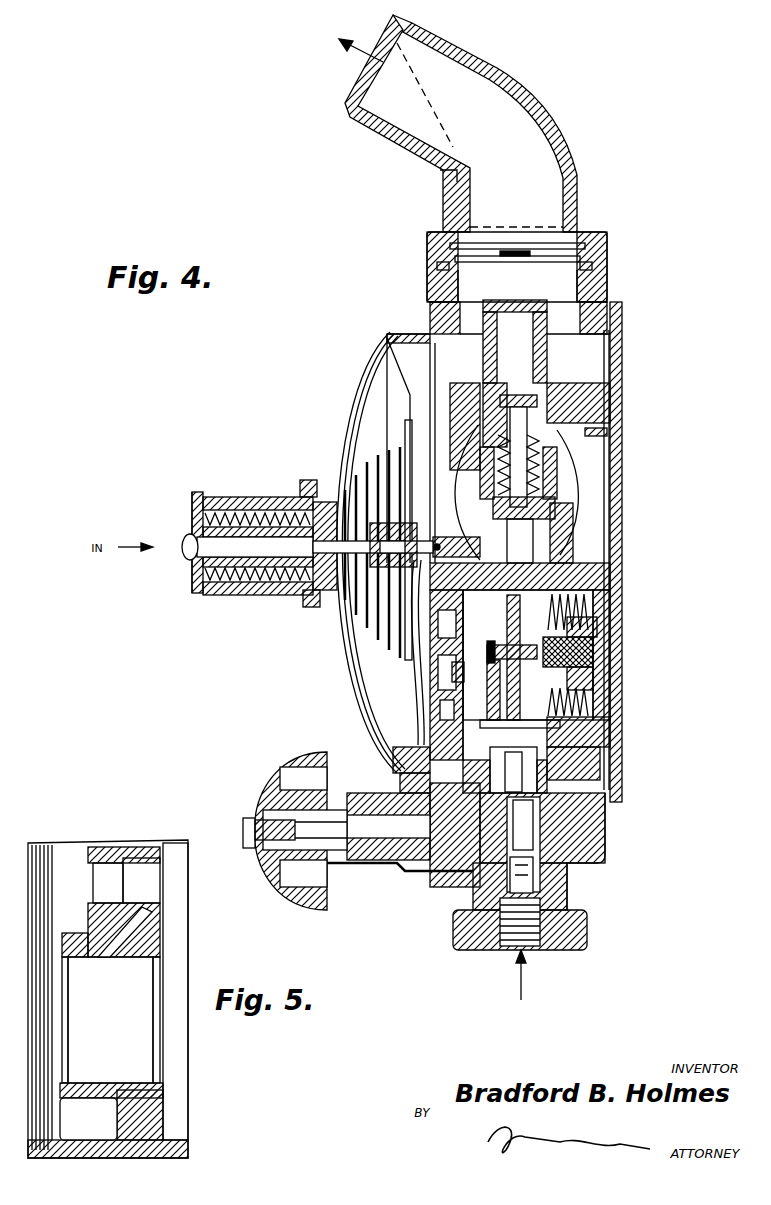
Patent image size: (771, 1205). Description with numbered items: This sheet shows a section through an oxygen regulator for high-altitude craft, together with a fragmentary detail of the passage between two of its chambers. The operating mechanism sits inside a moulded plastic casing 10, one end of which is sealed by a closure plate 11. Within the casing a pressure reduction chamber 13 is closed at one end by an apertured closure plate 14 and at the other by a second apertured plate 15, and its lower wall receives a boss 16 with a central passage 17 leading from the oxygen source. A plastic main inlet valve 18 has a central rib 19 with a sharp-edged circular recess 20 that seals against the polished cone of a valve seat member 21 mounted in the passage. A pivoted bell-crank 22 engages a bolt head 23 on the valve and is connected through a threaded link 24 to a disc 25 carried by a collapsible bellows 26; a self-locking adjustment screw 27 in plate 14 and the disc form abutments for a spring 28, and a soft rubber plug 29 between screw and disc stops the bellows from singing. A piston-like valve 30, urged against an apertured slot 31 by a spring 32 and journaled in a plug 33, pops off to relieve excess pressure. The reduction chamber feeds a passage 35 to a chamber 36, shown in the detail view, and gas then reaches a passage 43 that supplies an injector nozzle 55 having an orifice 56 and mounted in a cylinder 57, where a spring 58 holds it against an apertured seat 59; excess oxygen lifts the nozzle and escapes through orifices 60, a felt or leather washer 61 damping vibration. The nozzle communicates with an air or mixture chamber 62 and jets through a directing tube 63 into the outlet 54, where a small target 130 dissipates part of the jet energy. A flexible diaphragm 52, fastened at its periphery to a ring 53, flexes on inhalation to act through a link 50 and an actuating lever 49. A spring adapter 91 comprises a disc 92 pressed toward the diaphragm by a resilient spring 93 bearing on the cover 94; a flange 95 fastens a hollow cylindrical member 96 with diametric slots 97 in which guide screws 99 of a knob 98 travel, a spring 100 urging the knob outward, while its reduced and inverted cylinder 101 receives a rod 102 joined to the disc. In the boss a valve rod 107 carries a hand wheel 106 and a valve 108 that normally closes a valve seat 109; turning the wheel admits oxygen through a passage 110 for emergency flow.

In FIG. 4, the casing 10 is at (616, 331).
In FIG. 5, the casing 10 is at (95, 1152).
In FIG. 4, the closure plate 11 is at (618, 358).
In FIG. 4, the pressure reduction chamber 13 is at (480, 602).
In FIG. 5, the pressure reduction chamber 13 is at (133, 983).
In FIG. 4, the apertured closure plate 14 is at (585, 573).
In FIG. 4, the second apertured plate 15 is at (433, 737).
In FIG. 4, the boss 16 is at (588, 837).
In FIG. 4, the central passage 17 is at (523, 858).
In FIG. 4, the main inlet valve 18 is at (535, 753).
In FIG. 4, the central rib 19 is at (555, 737).
In FIG. 4, the sharp-edged circular recess 20 is at (530, 780).
In FIG. 4, the valve seat member 21 is at (525, 813).
In FIG. 4, the bell-crank 22 is at (511, 695).
In FIG. 4, the bolt head 23 is at (575, 707).
In FIG. 4, the threaded link 24 is at (500, 650).
In FIG. 4, the disc 25 is at (513, 600).
In FIG. 4, the collapsible bellows 26 is at (575, 592).
In FIG. 4, the self-locking adjustment screw 27 is at (585, 620).
In FIG. 4, the spring 28 is at (582, 668).
In FIG. 4, the soft rubber plug 29 is at (592, 645).
In FIG. 4, the piston-like valve 30 is at (433, 673).
In FIG. 4, the apertured slot 31 is at (467, 676).
In FIG. 4, the spring 32 is at (443, 677).
In FIG. 4, the plug 33 is at (446, 675).
In FIG. 5, the passage 35 is at (132, 935).
In FIG. 5, the chamber 36 is at (145, 863).
In FIG. 4, the passage 43 is at (524, 530).
In FIG. 4, the actuating lever 49 is at (462, 547).
In FIG. 4, the link 50 is at (438, 535).
In FIG. 4, the flexible diaphragm 52 is at (400, 370).
In FIG. 4, the ring 53 is at (412, 340).
In FIG. 4, the outlet 54 is at (507, 93).
In FIG. 4, the injector nozzle 55 is at (530, 432).
In FIG. 4, the orifice 56 is at (518, 412).
In FIG. 4, the cylinder 57 is at (490, 440).
In FIG. 4, the spring 58 is at (557, 482).
In FIG. 4, the apertured seat 59 is at (563, 533).
In FIG. 4, the orifices 60 is at (493, 490).
In FIG. 4, the felt or leather washer 61 is at (540, 448).
In FIG. 4, the air or mixture chamber 62 is at (612, 413).
In FIG. 4, the directing tube 63 is at (503, 325).
In FIG. 4, the spring adapter 91 is at (206, 492).
In FIG. 4, the disc 92 is at (405, 450).
In FIG. 4, the resilient spring 93 is at (368, 613).
In FIG. 4, the cover 94 is at (335, 400).
In FIG. 4, the flange 95 is at (330, 607).
In FIG. 4, the hollow cylindrical member 96 is at (240, 500).
In FIG. 4, the diametric slots 97 is at (282, 512).
In FIG. 4, the knob 98 is at (207, 597).
In FIG. 4, the guide screws 99 is at (313, 480).
In FIG. 4, the spring 100 is at (257, 570).
In FIG. 4, the reduced and inverted cylinder 101 is at (188, 552).
In FIG. 4, the rod 102 is at (315, 545).
In FIG. 4, the hand wheel 106 is at (287, 765).
In FIG. 4, the valve rod 107 is at (372, 838).
In FIG. 4, the valve 108 is at (460, 827).
In FIG. 4, the valve seat 109 is at (462, 913).
In FIG. 4, the passage 110 is at (400, 778).
In FIG. 4, the target 130 is at (510, 250).